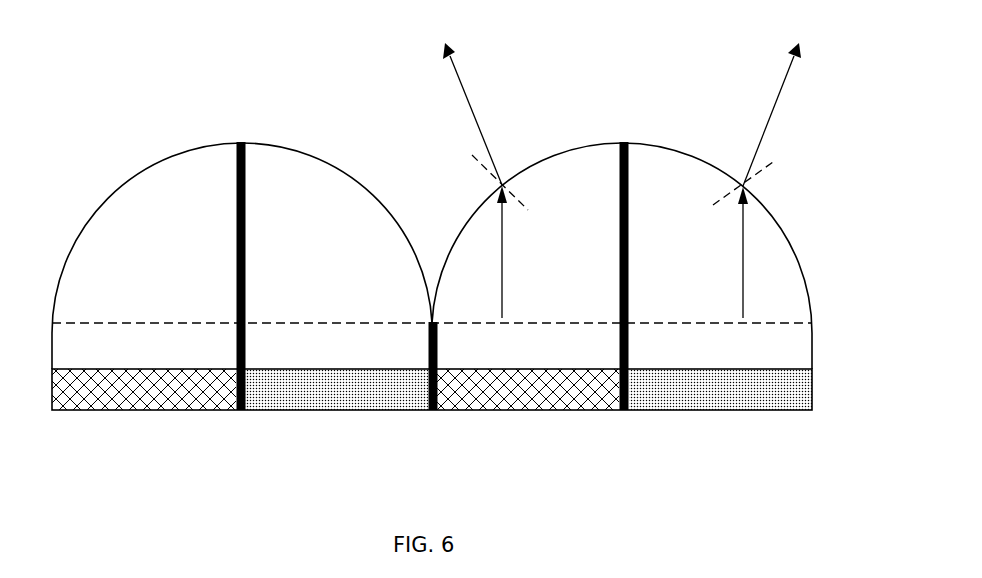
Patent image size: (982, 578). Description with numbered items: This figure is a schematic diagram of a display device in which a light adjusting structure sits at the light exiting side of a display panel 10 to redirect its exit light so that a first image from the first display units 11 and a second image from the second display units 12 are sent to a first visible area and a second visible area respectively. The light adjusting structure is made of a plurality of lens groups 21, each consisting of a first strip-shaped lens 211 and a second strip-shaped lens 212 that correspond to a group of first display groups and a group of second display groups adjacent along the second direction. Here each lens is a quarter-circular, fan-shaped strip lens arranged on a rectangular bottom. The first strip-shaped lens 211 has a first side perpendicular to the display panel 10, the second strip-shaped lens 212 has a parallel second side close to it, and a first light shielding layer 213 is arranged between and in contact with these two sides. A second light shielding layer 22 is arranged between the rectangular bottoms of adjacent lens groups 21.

The display panel 10 is at (462, 416).
The first display units 11 is at (132, 385).
The second display units 12 is at (302, 385).
The lens group 21 is at (242, 230).
The first strip-shaped lens 211 is at (158, 210).
The second strip-shaped lens 212 is at (335, 247).
The first light shielding layer 213 is at (620, 195).
The second light shielding layer 22 is at (432, 322).